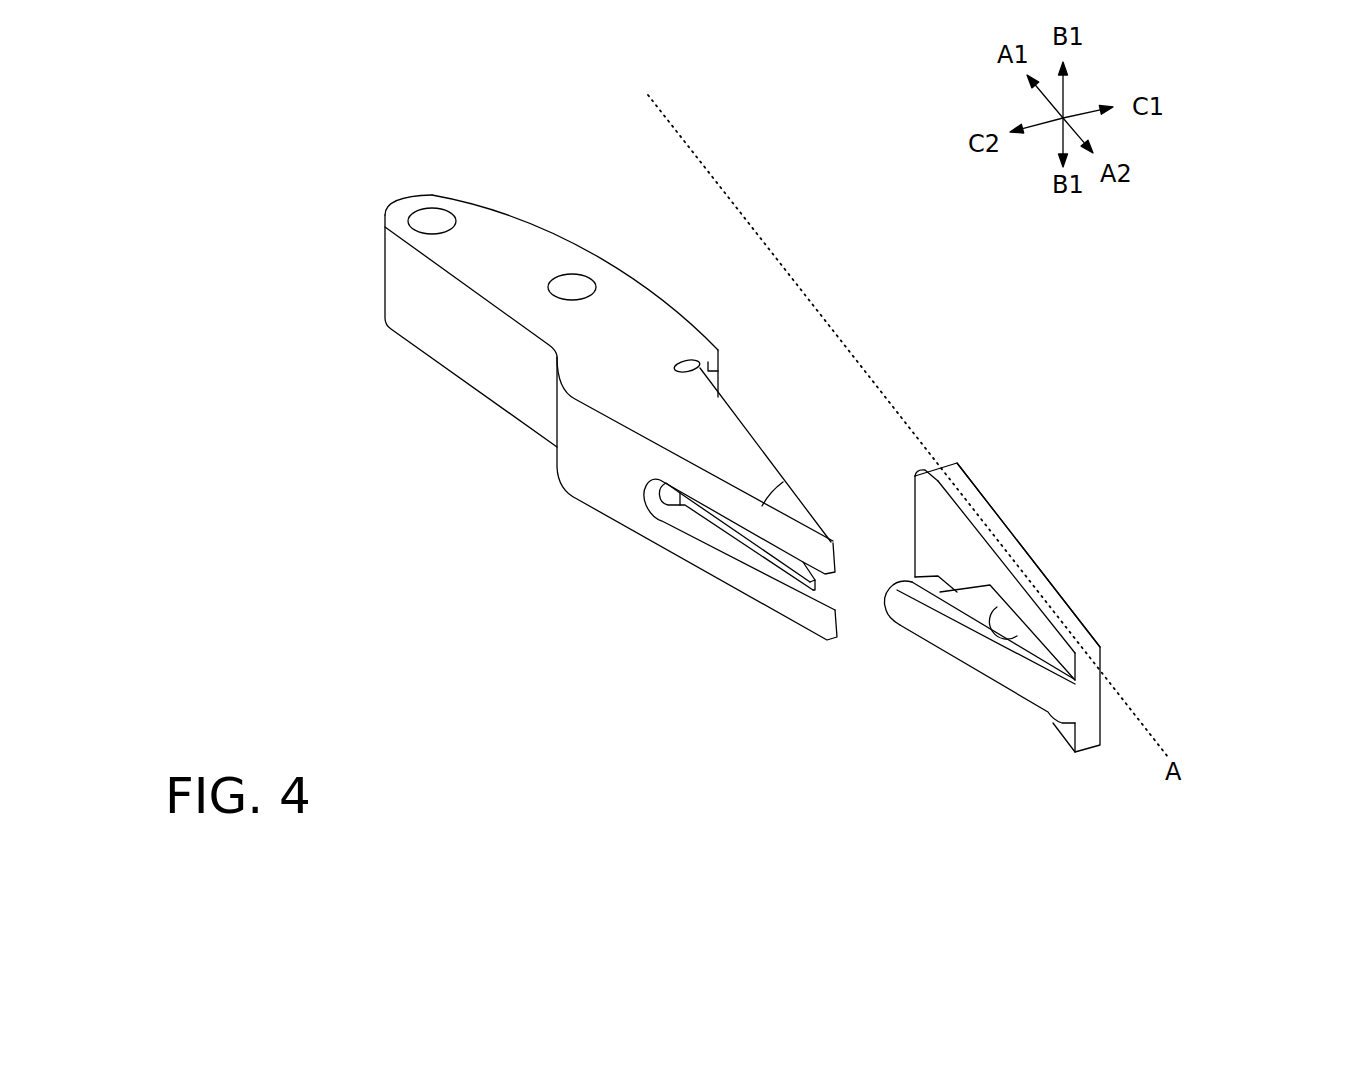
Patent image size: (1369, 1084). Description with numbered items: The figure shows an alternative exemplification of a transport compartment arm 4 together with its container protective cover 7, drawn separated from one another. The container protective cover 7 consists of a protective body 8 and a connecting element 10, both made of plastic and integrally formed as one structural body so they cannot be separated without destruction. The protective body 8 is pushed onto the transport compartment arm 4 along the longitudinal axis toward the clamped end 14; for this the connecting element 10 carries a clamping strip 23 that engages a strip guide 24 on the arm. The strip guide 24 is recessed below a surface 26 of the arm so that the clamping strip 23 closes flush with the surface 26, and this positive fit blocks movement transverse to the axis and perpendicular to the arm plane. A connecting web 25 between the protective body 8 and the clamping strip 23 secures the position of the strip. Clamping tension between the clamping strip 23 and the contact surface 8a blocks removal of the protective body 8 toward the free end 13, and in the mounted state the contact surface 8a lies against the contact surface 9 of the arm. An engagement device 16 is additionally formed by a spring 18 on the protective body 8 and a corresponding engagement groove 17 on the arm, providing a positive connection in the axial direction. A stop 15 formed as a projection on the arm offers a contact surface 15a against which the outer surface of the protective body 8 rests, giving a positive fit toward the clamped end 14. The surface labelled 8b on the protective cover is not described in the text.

The transport compartment arm 4 is at (497, 265).
The clamped end 14 is at (376, 171).
The stop 15 is at (697, 345).
The contact surface 15a is at (712, 372).
The engagement groove 17 is at (718, 350).
The contact surface 9 is at (779, 405).
The surface 26 is at (618, 473).
The strip guide 24 is at (616, 605).
The free end 13 is at (706, 673).
The container protective cover 7 is at (1225, 441).
The spring 18 is at (937, 461).
The latch bar upper surface 8b is at (960, 397).
The engagement device 16 is at (1177, 319).
The connecting element 10 is at (947, 733).
The contact surface 8a is at (947, 565).
The protective body 8 is at (1078, 628).
The clamping strip 23 is at (950, 645).
The connecting web 25 is at (998, 608).